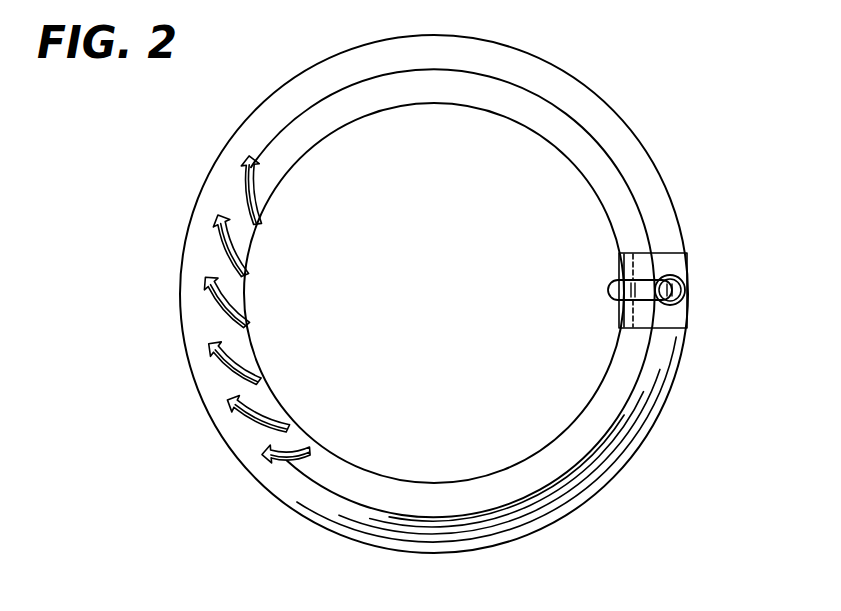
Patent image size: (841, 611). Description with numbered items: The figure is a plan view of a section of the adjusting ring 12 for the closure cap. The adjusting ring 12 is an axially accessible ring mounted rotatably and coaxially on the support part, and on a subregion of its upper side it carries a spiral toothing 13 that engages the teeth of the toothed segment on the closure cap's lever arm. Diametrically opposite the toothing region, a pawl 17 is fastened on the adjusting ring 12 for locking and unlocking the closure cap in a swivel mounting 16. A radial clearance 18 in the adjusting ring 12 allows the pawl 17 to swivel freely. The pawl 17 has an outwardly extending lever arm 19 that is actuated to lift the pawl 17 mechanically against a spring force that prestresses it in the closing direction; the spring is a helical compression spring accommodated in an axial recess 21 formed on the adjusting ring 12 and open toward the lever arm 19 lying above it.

The adjusting ring 12 is at (238, 128).
The spiral toothing 13 is at (217, 222).
The swivel mounting 16 is at (632, 250).
The pawl 17 is at (610, 290).
The radial clearance 18 is at (668, 318).
The lever arm 19 is at (647, 277).
The axial recess 21 is at (685, 293).